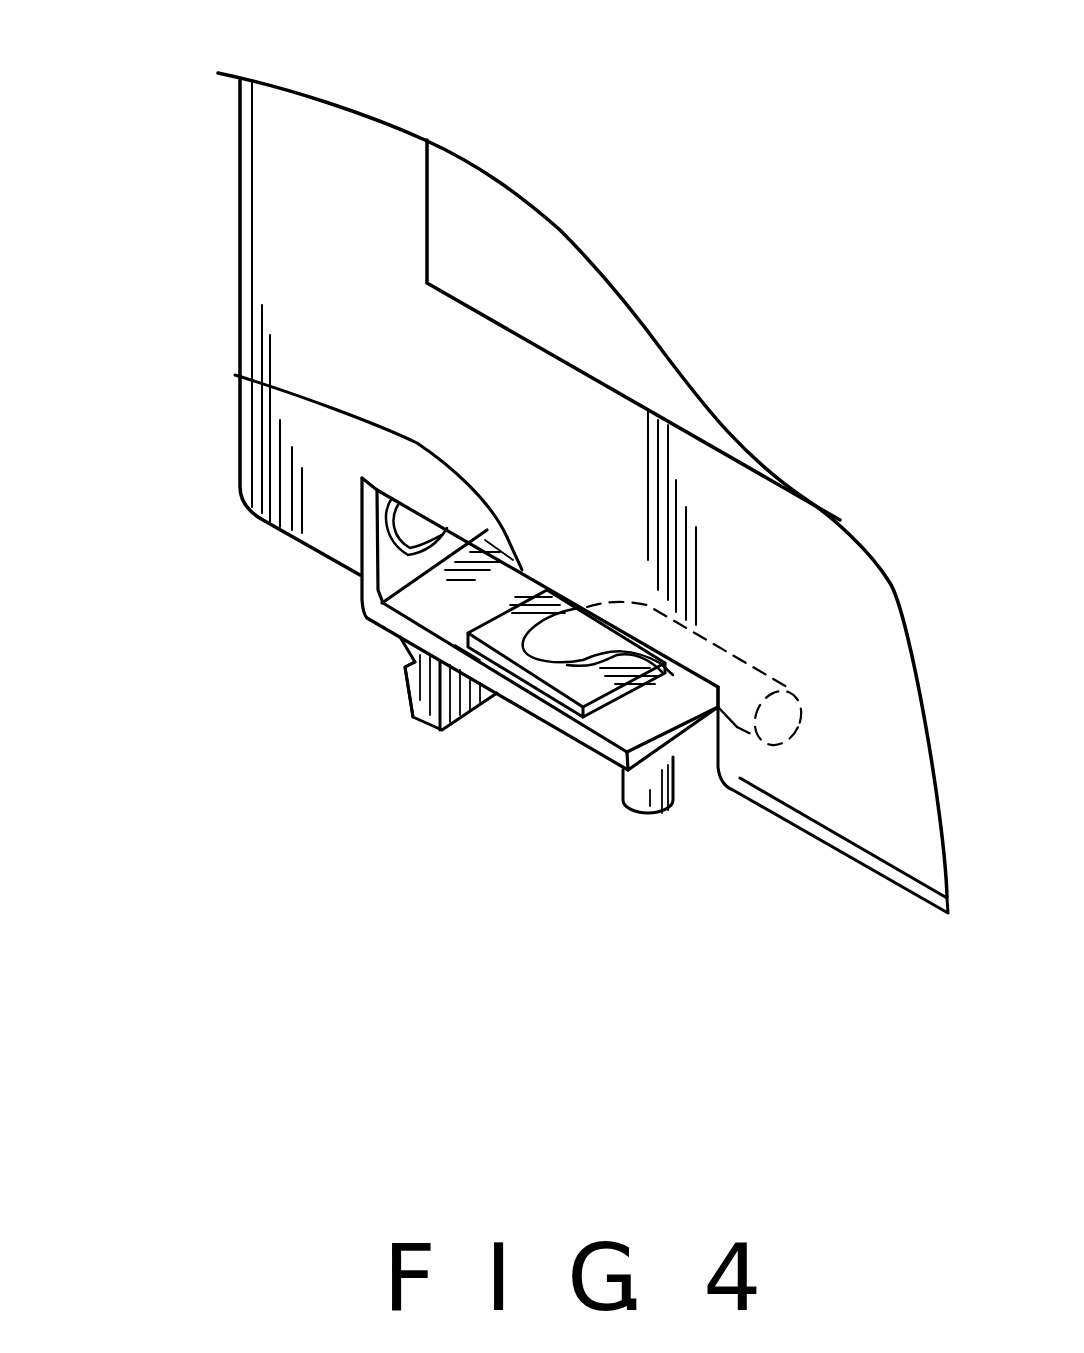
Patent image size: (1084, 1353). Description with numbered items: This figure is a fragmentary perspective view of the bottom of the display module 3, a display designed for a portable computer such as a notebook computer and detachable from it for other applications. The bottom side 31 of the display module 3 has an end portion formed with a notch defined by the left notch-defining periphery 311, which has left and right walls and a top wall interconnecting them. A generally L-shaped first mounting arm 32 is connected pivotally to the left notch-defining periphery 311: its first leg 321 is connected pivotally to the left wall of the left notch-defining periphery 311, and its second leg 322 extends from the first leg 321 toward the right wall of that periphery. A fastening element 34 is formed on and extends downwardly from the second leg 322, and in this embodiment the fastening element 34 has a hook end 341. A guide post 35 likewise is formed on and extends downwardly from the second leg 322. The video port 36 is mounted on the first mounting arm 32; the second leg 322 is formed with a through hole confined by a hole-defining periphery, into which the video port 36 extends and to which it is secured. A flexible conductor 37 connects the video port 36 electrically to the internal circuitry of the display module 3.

The display module 3 is at (177, 122).
The bottom side 31 is at (823, 843).
The left notch-defining periphery 311 is at (235, 375).
The first mounting arm 32 is at (413, 637).
The first leg 321 is at (367, 515).
The second leg 322 is at (467, 652).
The fastening element 34 is at (427, 730).
The hook end 341 is at (408, 688).
The guide post 35 is at (638, 793).
The video port 36 is at (503, 643).
The flexible conductor 37 is at (565, 640).